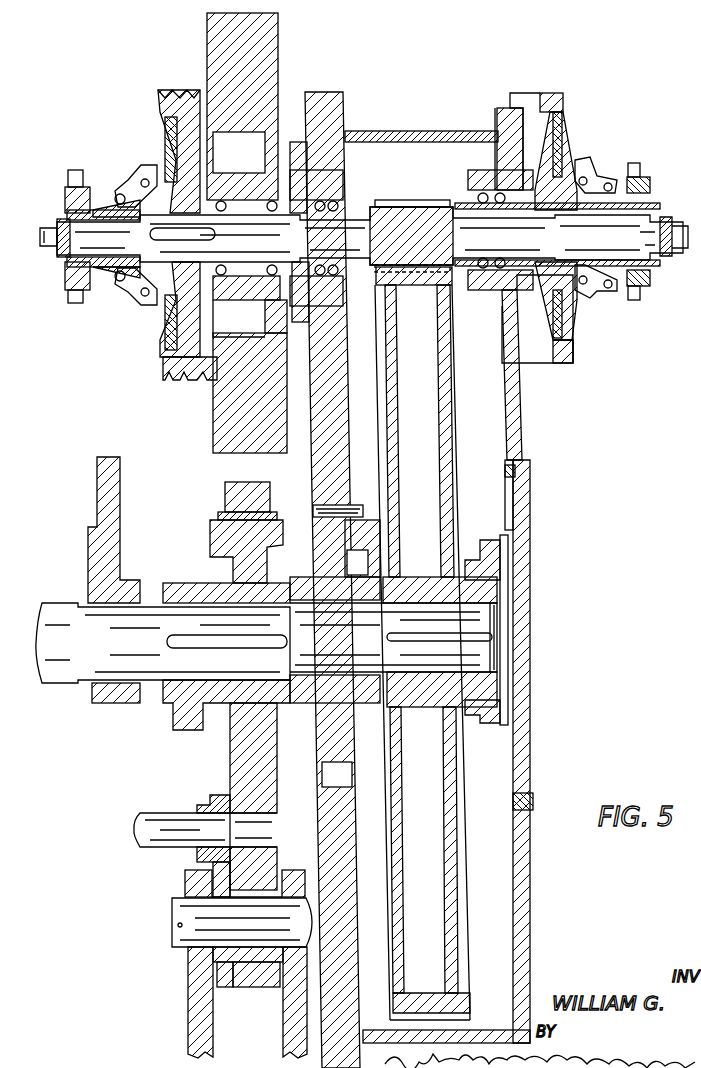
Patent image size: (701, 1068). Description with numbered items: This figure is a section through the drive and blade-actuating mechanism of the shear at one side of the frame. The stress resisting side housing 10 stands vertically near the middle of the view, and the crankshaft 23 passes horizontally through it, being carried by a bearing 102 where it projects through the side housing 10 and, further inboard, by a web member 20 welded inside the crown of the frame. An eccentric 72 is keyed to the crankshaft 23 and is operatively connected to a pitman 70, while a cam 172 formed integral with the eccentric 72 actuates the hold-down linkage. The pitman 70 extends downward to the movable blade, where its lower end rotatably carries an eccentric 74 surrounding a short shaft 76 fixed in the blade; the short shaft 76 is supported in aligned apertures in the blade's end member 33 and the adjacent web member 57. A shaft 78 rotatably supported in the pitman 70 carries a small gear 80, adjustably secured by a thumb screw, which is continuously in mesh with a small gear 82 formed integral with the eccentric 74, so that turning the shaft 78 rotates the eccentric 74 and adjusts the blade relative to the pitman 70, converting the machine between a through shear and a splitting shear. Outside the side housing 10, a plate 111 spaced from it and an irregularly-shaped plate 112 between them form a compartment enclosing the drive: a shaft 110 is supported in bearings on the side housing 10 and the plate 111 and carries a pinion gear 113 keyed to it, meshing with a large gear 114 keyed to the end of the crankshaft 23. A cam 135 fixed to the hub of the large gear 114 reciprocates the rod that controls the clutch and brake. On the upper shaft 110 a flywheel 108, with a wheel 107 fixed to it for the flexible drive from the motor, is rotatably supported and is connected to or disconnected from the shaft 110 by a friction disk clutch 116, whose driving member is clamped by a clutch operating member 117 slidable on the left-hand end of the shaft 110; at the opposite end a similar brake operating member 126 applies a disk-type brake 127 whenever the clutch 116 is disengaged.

The side housing 10 is at (331, 97).
The web member 20 is at (105, 473).
The crankshaft 23 is at (52, 612).
The end member 33 is at (295, 1027).
The web member 57 is at (195, 995).
The pitman 70 is at (245, 755).
The eccentric 72 is at (215, 527).
The eccentric 74 is at (262, 885).
The short shaft 76 is at (180, 915).
The shaft 78 is at (143, 815).
The small gear 80 is at (208, 806).
The small gear 82 is at (224, 990).
The bearing 102 is at (332, 602).
The wheel 107 is at (163, 367).
The flywheel 108 is at (228, 426).
The shaft 110 is at (357, 213).
The plate 111 is at (508, 412).
The irregularly-shaped plate 112 is at (437, 108).
The pinion gear 113 is at (418, 205).
The large gear 114 is at (460, 970).
The friction disk clutch 116 is at (160, 145).
The clutch operating member 117 is at (100, 277).
The brake operating member 126 is at (600, 280).
The disk-type brake 127 is at (568, 138).
The cam 135 is at (488, 540).
The cam 172 is at (173, 727).